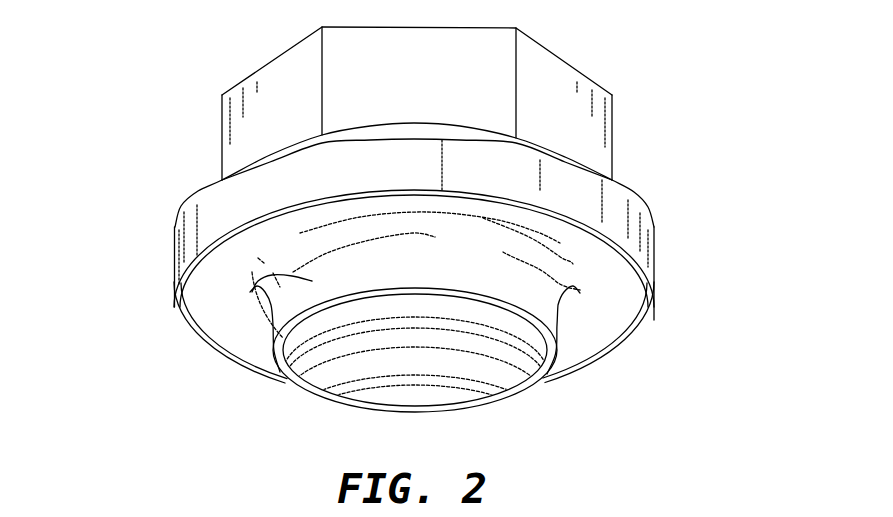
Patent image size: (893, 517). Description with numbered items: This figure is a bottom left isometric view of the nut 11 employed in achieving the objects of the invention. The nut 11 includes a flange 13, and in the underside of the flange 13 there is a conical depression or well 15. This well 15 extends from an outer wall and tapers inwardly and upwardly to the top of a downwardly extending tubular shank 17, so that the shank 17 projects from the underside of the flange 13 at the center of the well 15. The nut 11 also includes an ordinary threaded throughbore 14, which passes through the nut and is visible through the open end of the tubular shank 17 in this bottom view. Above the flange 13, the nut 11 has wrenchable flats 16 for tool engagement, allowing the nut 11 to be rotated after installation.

The nut 11 is at (410, 239).
The flange 13 is at (182, 248).
The threaded throughbore 14 is at (474, 314).
The conical depression or well 15 is at (620, 283).
The wrenchable flats 16 is at (233, 135).
The tubular shank 17 is at (250, 286).